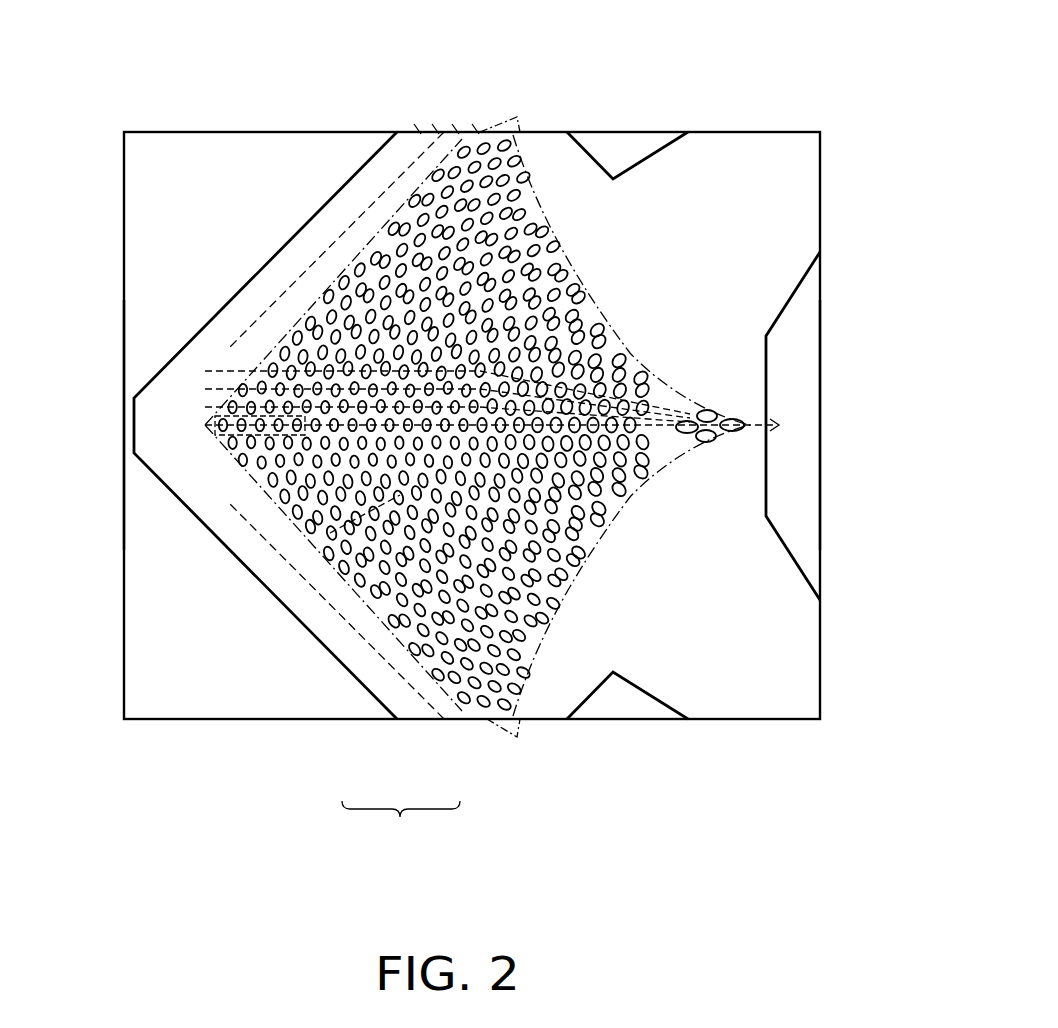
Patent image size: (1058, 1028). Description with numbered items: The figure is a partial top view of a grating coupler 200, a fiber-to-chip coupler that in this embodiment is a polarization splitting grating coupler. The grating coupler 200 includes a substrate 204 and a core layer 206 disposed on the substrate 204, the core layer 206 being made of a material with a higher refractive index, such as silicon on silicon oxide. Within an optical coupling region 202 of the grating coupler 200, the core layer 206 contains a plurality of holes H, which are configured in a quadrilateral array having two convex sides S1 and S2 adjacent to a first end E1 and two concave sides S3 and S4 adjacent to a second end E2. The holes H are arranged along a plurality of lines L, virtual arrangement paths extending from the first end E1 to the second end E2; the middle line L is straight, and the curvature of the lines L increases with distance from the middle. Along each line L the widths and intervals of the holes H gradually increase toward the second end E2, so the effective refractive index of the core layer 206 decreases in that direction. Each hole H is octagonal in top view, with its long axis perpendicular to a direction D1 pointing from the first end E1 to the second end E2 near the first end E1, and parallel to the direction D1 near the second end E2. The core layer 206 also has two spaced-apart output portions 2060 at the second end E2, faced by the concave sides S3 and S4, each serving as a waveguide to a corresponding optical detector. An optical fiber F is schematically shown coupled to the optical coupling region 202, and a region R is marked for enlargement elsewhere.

The grating coupler 200 is at (401, 826).
The optical coupling region 202 is at (540, 130).
The substrate 204 is at (340, 700).
The core layer 206 is at (417, 697).
The output portions 2060 is at (793, 182).
The convex side S1 is at (324, 258).
The convex side S2 is at (313, 580).
The concave side S3 is at (588, 548).
The concave side S4 is at (586, 303).
The first end E1 is at (108, 420).
The second end E2 is at (836, 424).
The direction D1 is at (787, 22).
The lines L is at (404, 130).
The region R is at (216, 436).
The optical fiber F is at (330, 533).
The holes H is at (718, 438).